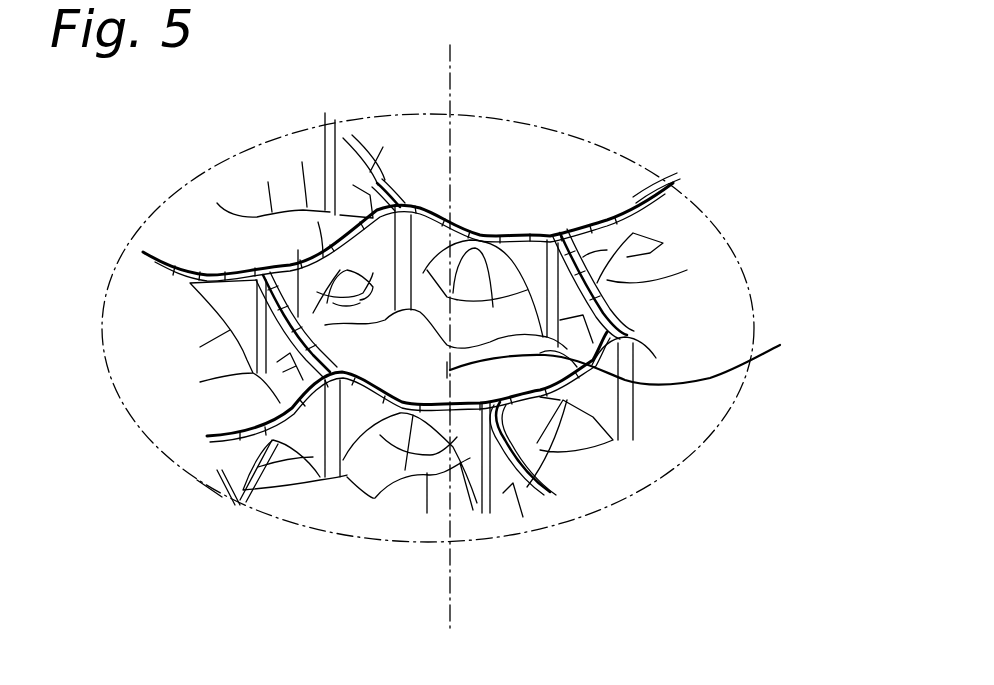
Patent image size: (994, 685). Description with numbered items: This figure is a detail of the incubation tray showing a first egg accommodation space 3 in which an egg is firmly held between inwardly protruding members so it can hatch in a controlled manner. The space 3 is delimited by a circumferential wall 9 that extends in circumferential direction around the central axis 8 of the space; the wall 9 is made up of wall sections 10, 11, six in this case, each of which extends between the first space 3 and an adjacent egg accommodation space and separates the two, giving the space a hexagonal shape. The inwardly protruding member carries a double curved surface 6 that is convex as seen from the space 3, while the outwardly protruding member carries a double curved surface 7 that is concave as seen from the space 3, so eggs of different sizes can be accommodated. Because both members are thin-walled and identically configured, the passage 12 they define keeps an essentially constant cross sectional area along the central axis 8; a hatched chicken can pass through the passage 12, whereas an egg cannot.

The first egg accommodation space 3 is at (419, 369).
The double curved surface of the inwardly protruding member 6 is at (468, 325).
The double curved surface of the outwardly protruding member 7 is at (390, 212).
The central axis 8 is at (612, 332).
The circumferential wall 9 is at (298, 250).
The wall section 10 is at (298, 324).
The wall section 11 is at (580, 272).
The passage 12 is at (533, 375).